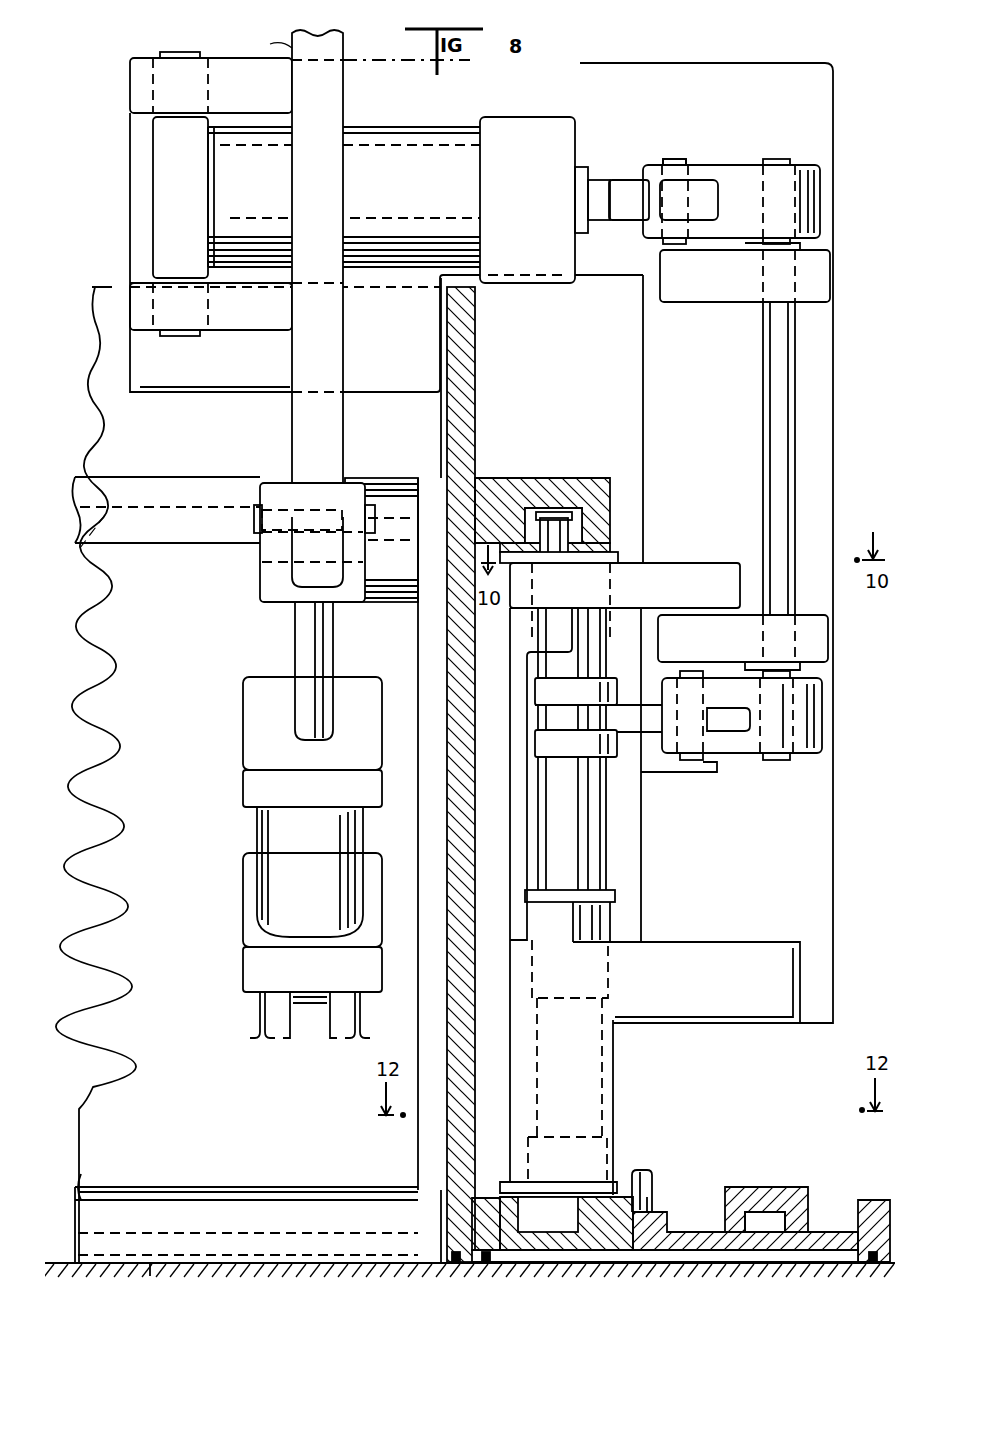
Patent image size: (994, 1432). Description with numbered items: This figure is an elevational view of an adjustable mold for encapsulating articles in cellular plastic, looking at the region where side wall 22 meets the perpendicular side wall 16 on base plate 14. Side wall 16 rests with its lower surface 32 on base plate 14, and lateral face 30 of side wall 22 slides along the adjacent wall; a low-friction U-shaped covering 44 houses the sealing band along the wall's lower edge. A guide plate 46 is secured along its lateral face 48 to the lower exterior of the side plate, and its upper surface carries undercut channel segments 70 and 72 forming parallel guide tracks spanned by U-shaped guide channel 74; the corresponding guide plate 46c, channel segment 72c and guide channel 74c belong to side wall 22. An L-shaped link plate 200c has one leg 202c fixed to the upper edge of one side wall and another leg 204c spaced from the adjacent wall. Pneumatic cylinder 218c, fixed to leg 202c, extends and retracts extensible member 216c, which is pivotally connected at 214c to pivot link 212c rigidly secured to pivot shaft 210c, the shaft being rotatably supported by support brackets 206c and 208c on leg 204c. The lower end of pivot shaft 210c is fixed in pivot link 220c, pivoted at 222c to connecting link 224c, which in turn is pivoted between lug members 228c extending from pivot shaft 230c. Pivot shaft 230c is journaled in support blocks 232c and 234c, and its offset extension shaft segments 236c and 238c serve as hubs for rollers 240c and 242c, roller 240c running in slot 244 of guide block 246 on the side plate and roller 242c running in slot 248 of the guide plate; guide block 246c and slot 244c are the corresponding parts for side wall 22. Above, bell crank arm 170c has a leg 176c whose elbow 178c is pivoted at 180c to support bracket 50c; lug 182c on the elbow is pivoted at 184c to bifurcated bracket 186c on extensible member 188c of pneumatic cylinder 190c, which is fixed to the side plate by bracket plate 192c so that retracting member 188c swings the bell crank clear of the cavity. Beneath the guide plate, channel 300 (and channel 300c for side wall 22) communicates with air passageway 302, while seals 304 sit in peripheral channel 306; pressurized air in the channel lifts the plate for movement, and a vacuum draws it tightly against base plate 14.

The base plate 14 is at (60, 1262).
The side wall 16 is at (470, 356).
The side wall 22 is at (105, 287).
The lateral face 30 is at (441, 433).
The lower surface 32 is at (448, 1262).
The U-shaped covering 44 is at (452, 1256).
The guide plate 46 is at (690, 1242).
The guide plate 46c is at (68, 1200).
The lateral face 48 is at (488, 1198).
The support bracket 50c is at (431, 632).
The undercut channel segment 70 is at (666, 1227).
The undercut channel segment 72 is at (856, 1219).
The undercut channel segment 72c is at (176, 1234).
The U-shaped guide channel 74 is at (760, 1200).
The U-shaped guide channel 74c is at (136, 1198).
The bell crank arm 170c is at (270, 50).
The leg 176c is at (324, 356).
The elbow 178c is at (361, 490).
The pivot 180c is at (262, 522).
The lug 182c is at (310, 520).
The pivot 184c is at (369, 550).
The bifurcated bracket 186c is at (264, 586).
The extensible member 188c is at (308, 643).
The pneumatic cylinder 190c is at (278, 830).
The bracket plate 192c is at (318, 1006).
The link plate 200c is at (773, 63).
The leg 202c is at (132, 163).
The leg 204c is at (799, 832).
The support bracket 206c is at (808, 272).
The support bracket 208c is at (795, 636).
The pivot shaft 210c is at (767, 402).
The pivot link 212c is at (800, 195).
The pivotal connection 214c is at (676, 159).
The extensible member 216c is at (598, 196).
The pneumatic cylinder 218c is at (415, 197).
The pivot link 220c is at (800, 711).
The pivotal connection 222c is at (694, 772).
The connecting link 224c is at (632, 712).
The lug members 228c is at (600, 744).
The pivot shaft 230c is at (585, 838).
The support block 232c is at (665, 566).
The support block 234c is at (698, 947).
The extension shaft segment 236c is at (554, 562).
The extension shaft segment 238c is at (550, 1200).
The roller 240c is at (538, 527).
The roller 242c is at (543, 1216).
The slot 244 is at (562, 508).
The slot 244c is at (85, 552).
The guide block 246 is at (537, 490).
The guide block 246c is at (132, 485).
The slot 248 is at (554, 1262).
The channel 300 is at (730, 1256).
The channel 300c is at (158, 1272).
The air passageway 302 is at (645, 1210).
The seals 304 is at (486, 1262).
The peripheral channel 306 is at (875, 1180).